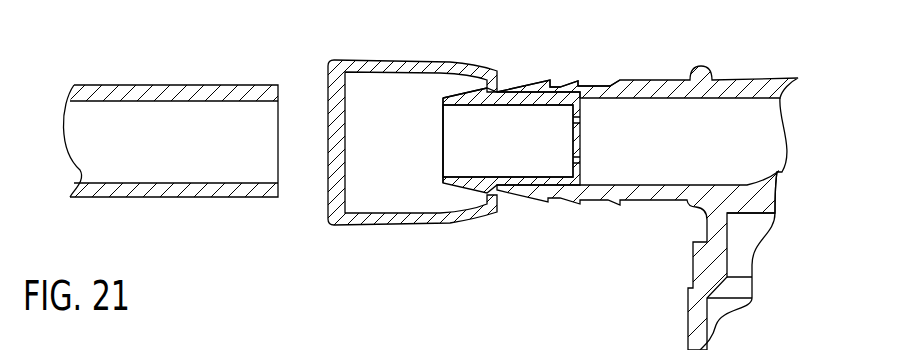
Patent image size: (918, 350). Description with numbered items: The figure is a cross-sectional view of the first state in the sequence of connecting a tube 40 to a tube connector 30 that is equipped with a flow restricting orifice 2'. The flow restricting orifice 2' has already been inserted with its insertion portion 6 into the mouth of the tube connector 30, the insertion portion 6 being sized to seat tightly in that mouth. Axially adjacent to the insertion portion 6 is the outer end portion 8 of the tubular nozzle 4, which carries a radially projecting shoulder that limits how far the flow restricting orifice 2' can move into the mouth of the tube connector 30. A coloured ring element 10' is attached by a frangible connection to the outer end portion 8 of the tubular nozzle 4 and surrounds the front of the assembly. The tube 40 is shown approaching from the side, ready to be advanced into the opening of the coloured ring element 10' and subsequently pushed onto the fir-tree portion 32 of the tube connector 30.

The tube 40 is at (168, 85).
The flow restricting orifice 2' is at (477, 116).
The coloured ring element 10' is at (412, 118).
The tubular nozzle 4 is at (560, 140).
The outer end portion 8 is at (465, 95).
The insertion portion 6 is at (527, 106).
The tube connector 30 is at (646, 76).
The fir-tree portion 32 is at (576, 79).